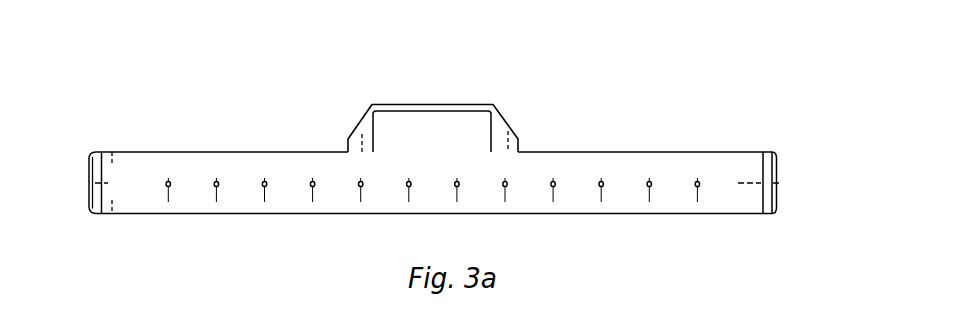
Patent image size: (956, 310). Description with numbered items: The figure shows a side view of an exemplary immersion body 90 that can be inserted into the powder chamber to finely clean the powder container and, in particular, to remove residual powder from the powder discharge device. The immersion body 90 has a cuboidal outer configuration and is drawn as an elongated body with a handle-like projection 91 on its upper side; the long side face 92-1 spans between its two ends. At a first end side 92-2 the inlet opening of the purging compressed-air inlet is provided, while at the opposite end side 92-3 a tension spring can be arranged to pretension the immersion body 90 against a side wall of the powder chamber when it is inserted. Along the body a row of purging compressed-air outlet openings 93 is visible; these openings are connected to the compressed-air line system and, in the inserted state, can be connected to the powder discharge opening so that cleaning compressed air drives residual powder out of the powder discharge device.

The immersion body 90 is at (437, 155).
The handle 91 is at (433, 103).
The bar body 92-1 is at (438, 158).
The first end side 92-2 is at (69, 167).
The opposite end side 92-3 is at (804, 168).
The purging compressed-air outlet opening 93 is at (373, 217).